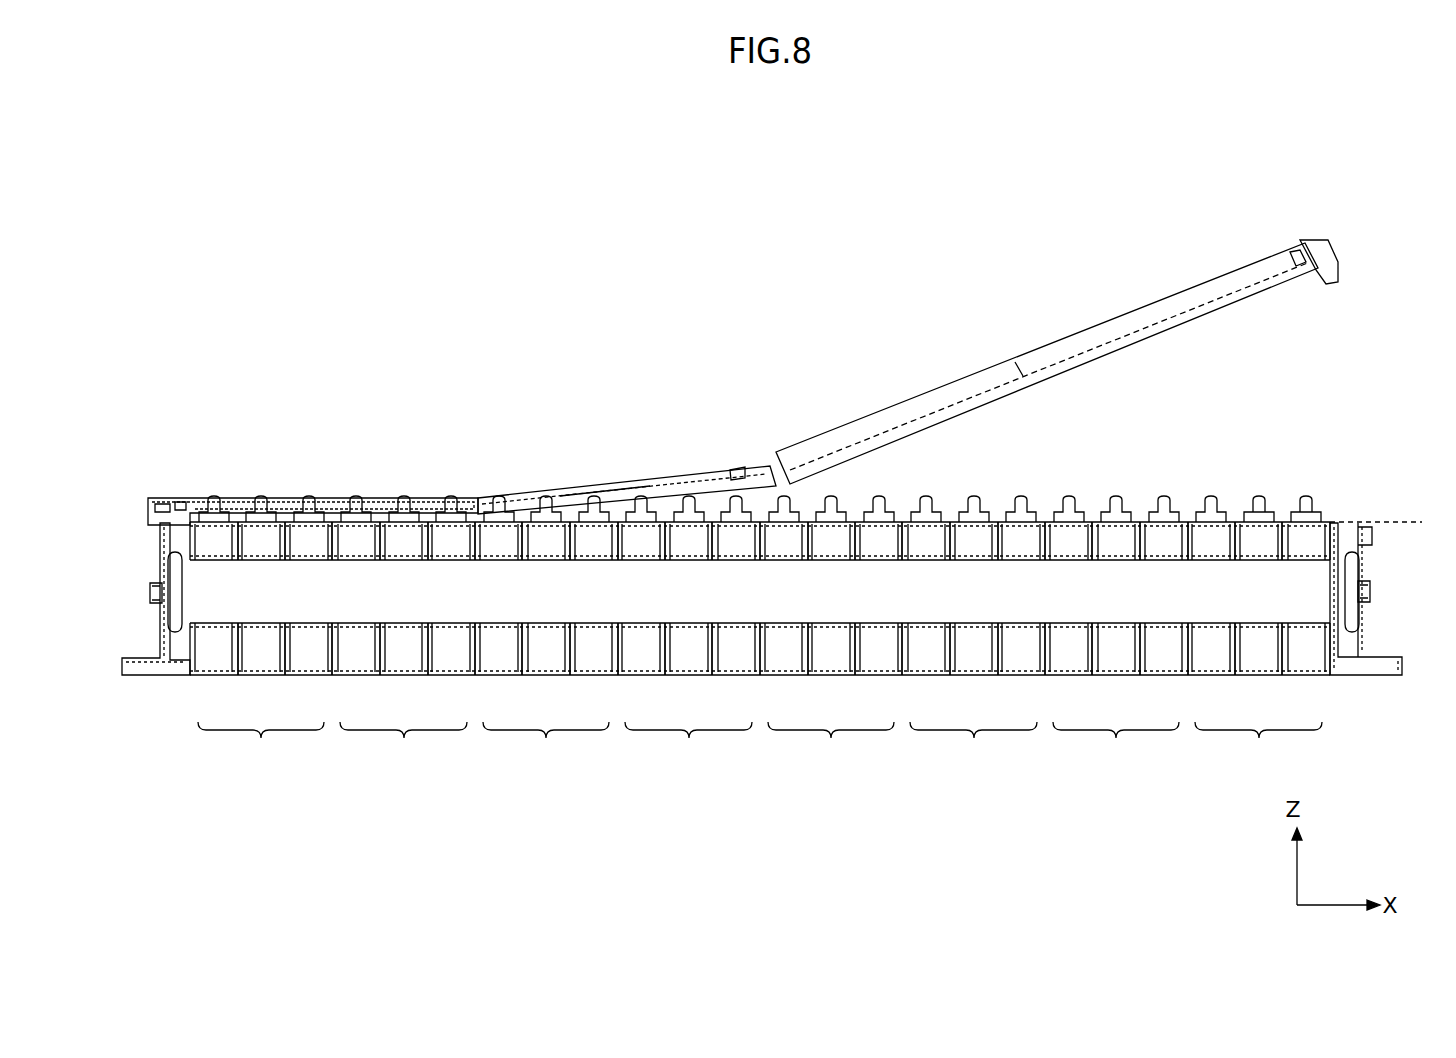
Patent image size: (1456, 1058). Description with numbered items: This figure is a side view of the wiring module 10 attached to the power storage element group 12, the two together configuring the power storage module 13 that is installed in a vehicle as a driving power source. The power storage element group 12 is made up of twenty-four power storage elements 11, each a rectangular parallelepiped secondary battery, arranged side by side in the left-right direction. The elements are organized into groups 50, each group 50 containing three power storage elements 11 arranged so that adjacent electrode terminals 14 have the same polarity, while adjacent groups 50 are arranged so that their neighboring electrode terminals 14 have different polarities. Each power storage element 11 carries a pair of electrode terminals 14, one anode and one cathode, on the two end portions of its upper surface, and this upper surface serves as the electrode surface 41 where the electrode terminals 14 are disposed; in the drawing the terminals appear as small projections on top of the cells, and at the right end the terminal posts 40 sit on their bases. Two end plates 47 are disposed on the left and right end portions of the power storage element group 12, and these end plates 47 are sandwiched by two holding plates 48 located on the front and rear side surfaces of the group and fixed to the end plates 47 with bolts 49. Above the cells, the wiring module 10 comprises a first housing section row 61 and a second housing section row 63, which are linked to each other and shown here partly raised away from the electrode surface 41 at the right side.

The wiring module 10 is at (1226, 205).
The power storage element 11 is at (1304, 698).
The power storage element group 12 is at (1283, 766).
The power storage module 13 is at (189, 460).
The electrode terminal 14 is at (1297, 516).
The electrode terminal 40 is at (1306, 496).
The electrode surface 41 is at (1407, 516).
The end plate 47 is at (170, 650).
The holding plate 48 is at (190, 580).
The bolt 49 is at (150, 594).
The group of power storage elements 50 is at (760, 632).
The first housing section row 61 is at (952, 393).
The second housing section row 63 is at (808, 447).